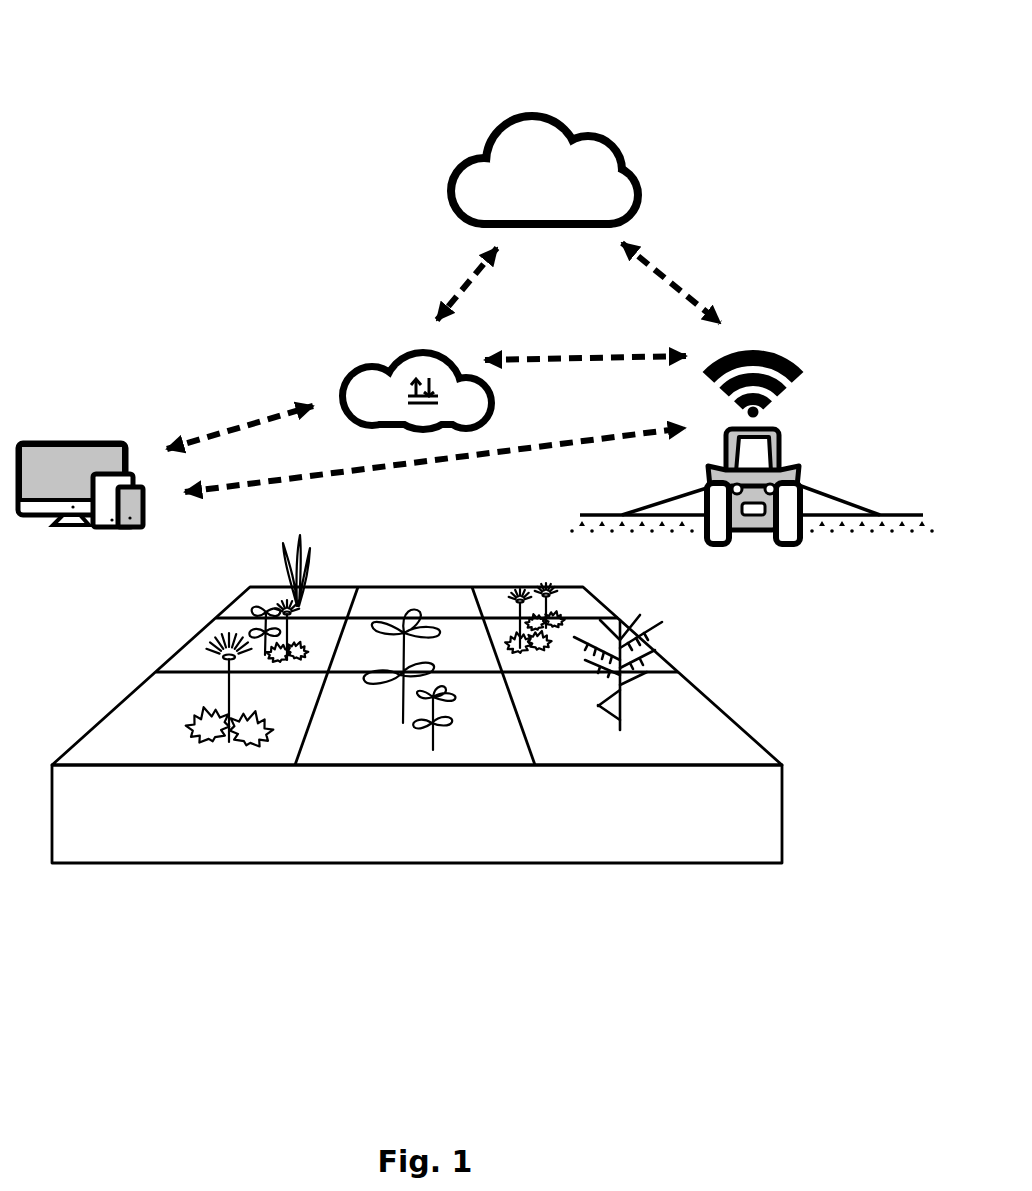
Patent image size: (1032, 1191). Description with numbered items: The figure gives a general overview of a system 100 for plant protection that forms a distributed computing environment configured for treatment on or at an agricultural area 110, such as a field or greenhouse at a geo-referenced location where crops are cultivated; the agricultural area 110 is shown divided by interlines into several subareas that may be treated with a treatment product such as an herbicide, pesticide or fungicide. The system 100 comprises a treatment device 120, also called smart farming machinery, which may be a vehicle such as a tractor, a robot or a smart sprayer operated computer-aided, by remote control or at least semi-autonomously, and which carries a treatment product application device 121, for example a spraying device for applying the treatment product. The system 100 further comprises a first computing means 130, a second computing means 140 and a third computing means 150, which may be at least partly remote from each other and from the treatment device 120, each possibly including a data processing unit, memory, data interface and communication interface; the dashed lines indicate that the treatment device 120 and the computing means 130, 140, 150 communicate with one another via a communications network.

The system 100 is at (393, 98).
The agricultural area 110 is at (417, 699).
The treatment device 120 is at (752, 523).
The treatment product application device 121 is at (833, 492).
The first computing resource or means 130 is at (544, 170).
The second computing resource or means 140 is at (377, 366).
The third computing resource or means 150 is at (116, 442).